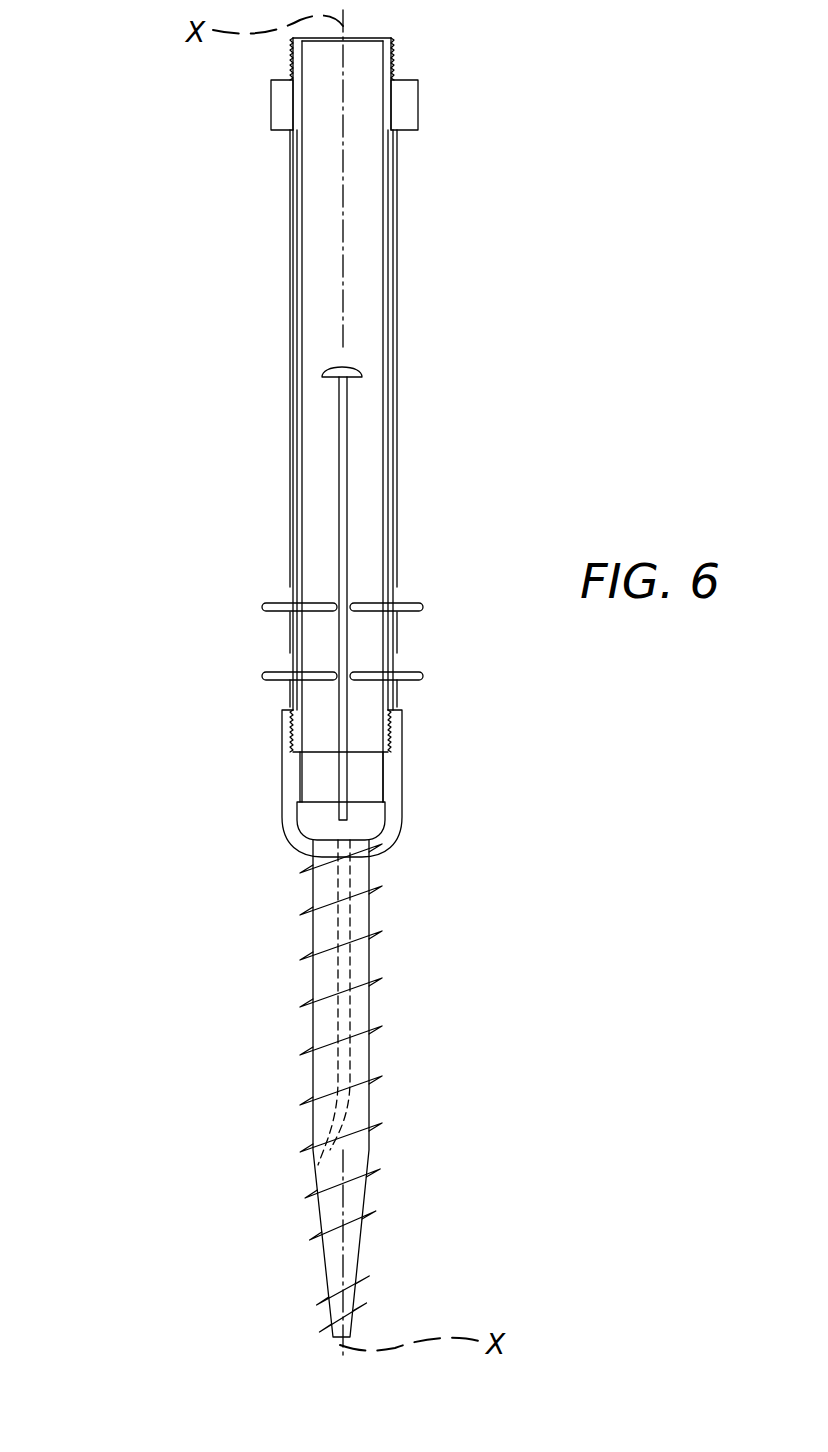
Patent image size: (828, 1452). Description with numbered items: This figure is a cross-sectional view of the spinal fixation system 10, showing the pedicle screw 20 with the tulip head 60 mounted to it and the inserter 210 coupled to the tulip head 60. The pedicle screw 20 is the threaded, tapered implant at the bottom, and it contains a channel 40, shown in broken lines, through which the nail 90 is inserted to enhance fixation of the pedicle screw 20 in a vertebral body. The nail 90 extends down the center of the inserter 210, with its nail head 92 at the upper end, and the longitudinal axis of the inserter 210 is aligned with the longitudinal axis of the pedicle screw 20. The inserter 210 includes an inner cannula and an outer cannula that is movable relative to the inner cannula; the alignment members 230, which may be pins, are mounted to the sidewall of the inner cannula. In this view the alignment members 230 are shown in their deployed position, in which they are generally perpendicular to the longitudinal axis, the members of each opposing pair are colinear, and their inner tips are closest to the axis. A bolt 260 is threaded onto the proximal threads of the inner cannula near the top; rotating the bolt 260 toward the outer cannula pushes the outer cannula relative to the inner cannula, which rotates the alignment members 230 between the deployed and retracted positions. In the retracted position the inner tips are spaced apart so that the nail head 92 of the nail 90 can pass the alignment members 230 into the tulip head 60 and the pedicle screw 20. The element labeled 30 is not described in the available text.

The spinal fixation system 10 is at (98, 200).
The pedicle screw 20 is at (369, 958).
The insert 30 is at (377, 815).
The channel 40 is at (350, 1010).
The tulip head 60 is at (402, 772).
The nail 90 is at (347, 490).
The nail head 92 is at (355, 368).
The inserter 210 is at (400, 264).
The alignment members 230 is at (262, 604).
The bolt 260 is at (418, 105).